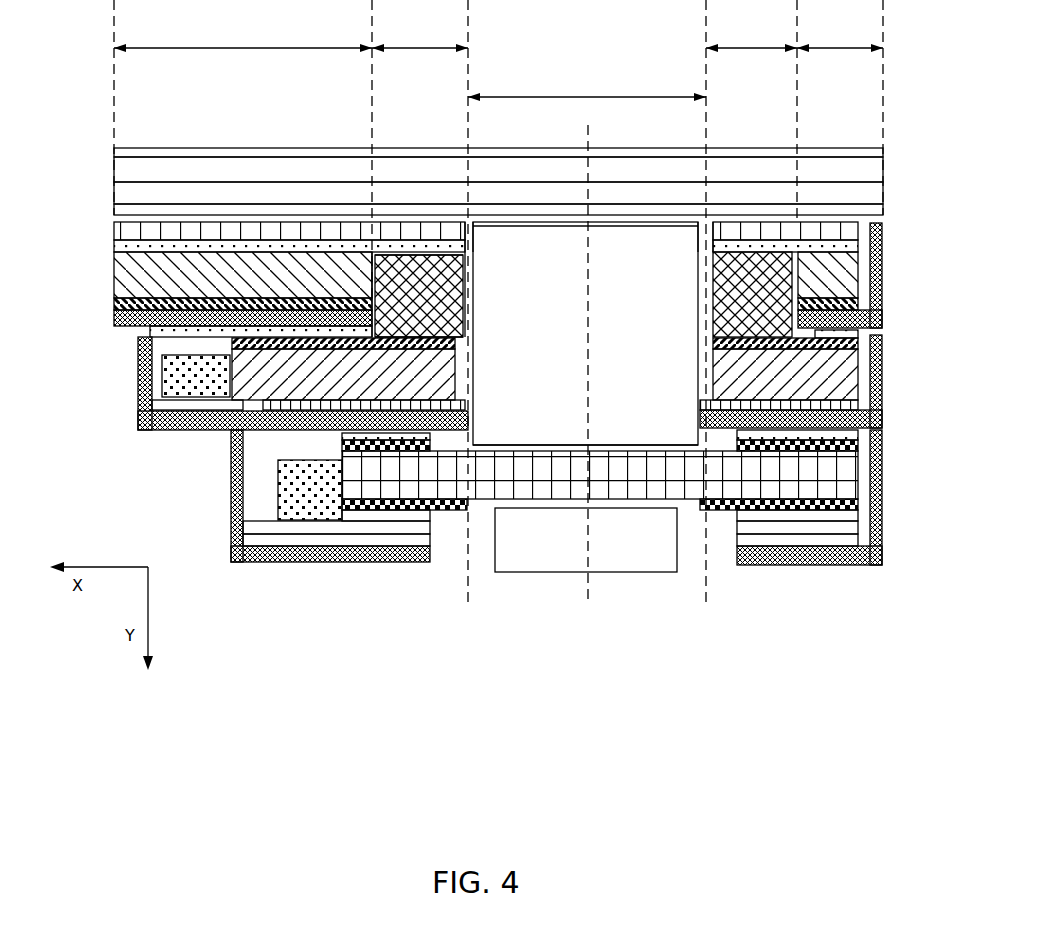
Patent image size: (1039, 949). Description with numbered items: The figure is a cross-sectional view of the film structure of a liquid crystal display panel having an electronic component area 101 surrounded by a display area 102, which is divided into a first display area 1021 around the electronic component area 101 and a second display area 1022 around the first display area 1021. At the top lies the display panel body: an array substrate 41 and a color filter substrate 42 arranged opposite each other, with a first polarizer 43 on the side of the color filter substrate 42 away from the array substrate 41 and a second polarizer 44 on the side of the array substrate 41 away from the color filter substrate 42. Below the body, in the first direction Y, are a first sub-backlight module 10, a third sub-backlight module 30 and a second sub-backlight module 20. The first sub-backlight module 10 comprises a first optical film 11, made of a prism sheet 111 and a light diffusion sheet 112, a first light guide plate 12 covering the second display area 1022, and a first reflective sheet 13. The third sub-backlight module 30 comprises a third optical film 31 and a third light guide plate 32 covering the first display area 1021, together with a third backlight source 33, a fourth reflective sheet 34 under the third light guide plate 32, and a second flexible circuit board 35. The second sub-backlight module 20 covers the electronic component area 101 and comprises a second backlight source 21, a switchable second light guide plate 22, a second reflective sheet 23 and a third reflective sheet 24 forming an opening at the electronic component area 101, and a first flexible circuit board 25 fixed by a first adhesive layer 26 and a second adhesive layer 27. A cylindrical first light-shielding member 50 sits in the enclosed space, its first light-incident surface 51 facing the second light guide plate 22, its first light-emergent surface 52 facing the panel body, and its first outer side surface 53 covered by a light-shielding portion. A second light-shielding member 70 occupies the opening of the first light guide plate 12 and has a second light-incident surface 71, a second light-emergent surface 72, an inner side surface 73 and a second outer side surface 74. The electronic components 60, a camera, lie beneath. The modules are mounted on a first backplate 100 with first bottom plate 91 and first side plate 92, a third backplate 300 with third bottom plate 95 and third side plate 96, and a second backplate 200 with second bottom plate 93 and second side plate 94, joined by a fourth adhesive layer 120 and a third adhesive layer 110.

The first sub-backlight module 10 is at (454, 462).
The first optical film 11 is at (454, 460).
The prism sheet 111 is at (118, 248).
The light diffusion sheet 112 is at (118, 231).
The first light guide plate 12 is at (118, 279).
The first reflective sheet 13 is at (118, 304).
The second sub-backlight module 20 is at (554, 617).
The second backlight source 21 is at (297, 490).
The second light guide plate 22 is at (845, 478).
The second reflective sheet 23 is at (860, 452).
The third reflective sheet 24 is at (445, 510).
The first flexible circuit board 25 is at (370, 527).
The first adhesive layer 26 is at (408, 515).
The second adhesive layer 27 is at (322, 540).
The third sub-backlight module 30 is at (516, 542).
The third optical film 31 is at (860, 343).
The third light guide plate 32 is at (850, 390).
The third backlight source 33 is at (165, 382).
The fourth reflective sheet 34 is at (850, 405).
The second flexible circuit board 35 is at (172, 404).
The array substrate 41 is at (883, 193).
The color filter substrate 42 is at (883, 170).
The first polarizer 43 is at (883, 153).
The second polarizer 44 is at (883, 210).
The first light-shielding member 50 is at (640, 237).
The first light-incident surface 51 is at (545, 446).
The first light-emergent surface 52 is at (558, 224).
The first outer side surface 53 is at (470, 233).
The electronic components 60 is at (645, 557).
The second light-shielding member 70 is at (785, 281).
The second light-incident surface 71 is at (430, 335).
The second light-emergent surface 72 is at (405, 258).
The inner side surface 73 is at (465, 268).
The second outer side surface 74 is at (377, 283).
The first bottom plate 91 is at (118, 320).
The first side plate 92 is at (878, 253).
The second bottom plate 93 is at (275, 548).
The second side plate 94 is at (236, 514).
The third bottom plate 95 is at (186, 432).
The third side plate 96 is at (138, 360).
The first backplate 100 is at (499, 465).
The electronic component area 101 is at (587, 88).
The display area 102 is at (498, 357).
The first display area 1021 is at (584, 37).
The second display area 1022 is at (498, 37).
The third adhesive layer 110 is at (855, 433).
The fourth adhesive layer 120 is at (155, 335).
The second backplate 200 is at (554, 568).
The third backplate 300 is at (531, 521).